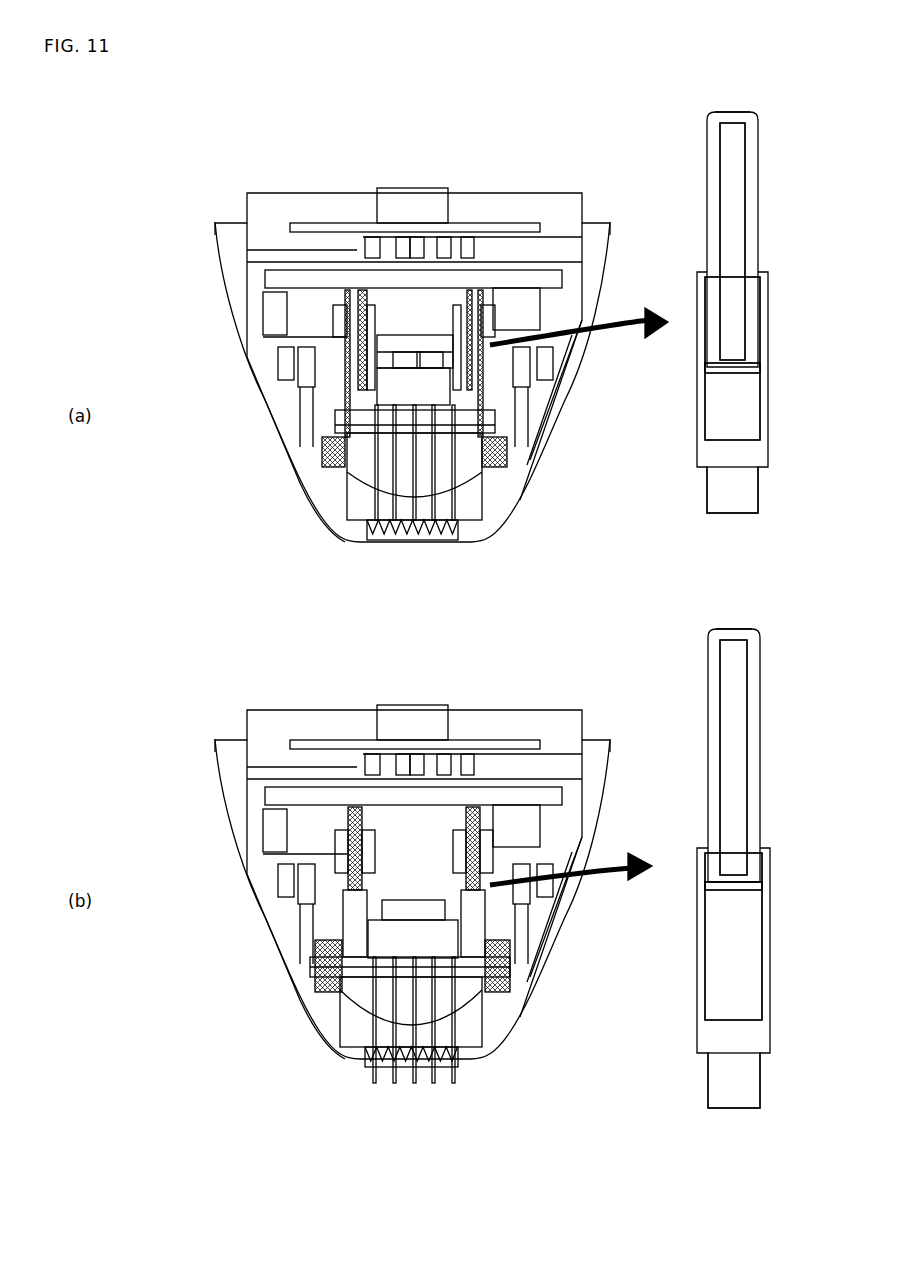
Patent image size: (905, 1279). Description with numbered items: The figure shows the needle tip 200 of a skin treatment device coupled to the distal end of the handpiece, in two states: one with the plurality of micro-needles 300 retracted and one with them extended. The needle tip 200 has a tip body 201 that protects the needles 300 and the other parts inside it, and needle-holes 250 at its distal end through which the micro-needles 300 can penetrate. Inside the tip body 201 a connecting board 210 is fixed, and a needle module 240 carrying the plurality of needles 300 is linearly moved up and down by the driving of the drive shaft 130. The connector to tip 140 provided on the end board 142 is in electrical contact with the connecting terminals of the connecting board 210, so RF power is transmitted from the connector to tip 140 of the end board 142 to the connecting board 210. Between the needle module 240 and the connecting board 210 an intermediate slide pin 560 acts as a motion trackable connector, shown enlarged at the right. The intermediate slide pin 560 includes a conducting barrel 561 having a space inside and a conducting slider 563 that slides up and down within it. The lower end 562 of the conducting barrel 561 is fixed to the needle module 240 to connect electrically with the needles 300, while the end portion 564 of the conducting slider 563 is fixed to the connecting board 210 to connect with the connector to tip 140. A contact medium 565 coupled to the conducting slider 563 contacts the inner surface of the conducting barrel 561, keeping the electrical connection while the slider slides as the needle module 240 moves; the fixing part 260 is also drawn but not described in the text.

The drive shaft 130 is at (380, 207).
The connector to tip 140 is at (365, 250).
The end board 142 is at (290, 228).
The needle tip 200 is at (562, 432).
The tip body 201 is at (540, 465).
The connecting board 210 is at (272, 280).
The needle module 240 is at (350, 420).
The needle-holes 250 is at (470, 540).
The fixing member 260 is at (325, 447).
The micro-needles 300 is at (360, 490).
The intermediate slide pin 560 is at (335, 330).
The conducting barrel 561 is at (768, 296).
The lower end 562 is at (758, 505).
The conducting slider 563 is at (755, 180).
The end portion 564 is at (752, 108).
The contact medium 565 is at (760, 366).